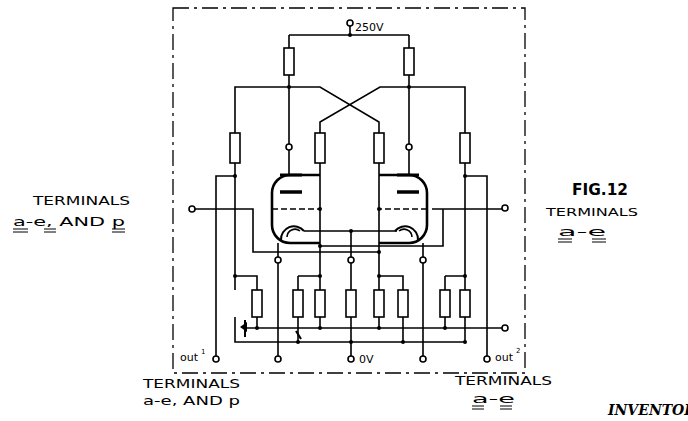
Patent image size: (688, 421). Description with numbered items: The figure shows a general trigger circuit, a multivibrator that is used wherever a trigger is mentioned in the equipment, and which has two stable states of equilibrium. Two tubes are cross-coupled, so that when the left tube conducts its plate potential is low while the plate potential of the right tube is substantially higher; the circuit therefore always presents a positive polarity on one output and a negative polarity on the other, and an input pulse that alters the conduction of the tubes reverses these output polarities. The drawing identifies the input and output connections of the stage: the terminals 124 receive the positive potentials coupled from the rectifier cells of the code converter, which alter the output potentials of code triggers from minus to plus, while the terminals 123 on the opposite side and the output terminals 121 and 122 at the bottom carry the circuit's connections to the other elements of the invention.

The output terminal out1 121 is at (220, 273).
The output terminal out2 122 is at (485, 273).
The input terminal 123 is at (506, 200).
The terminals 124 is at (279, 222).